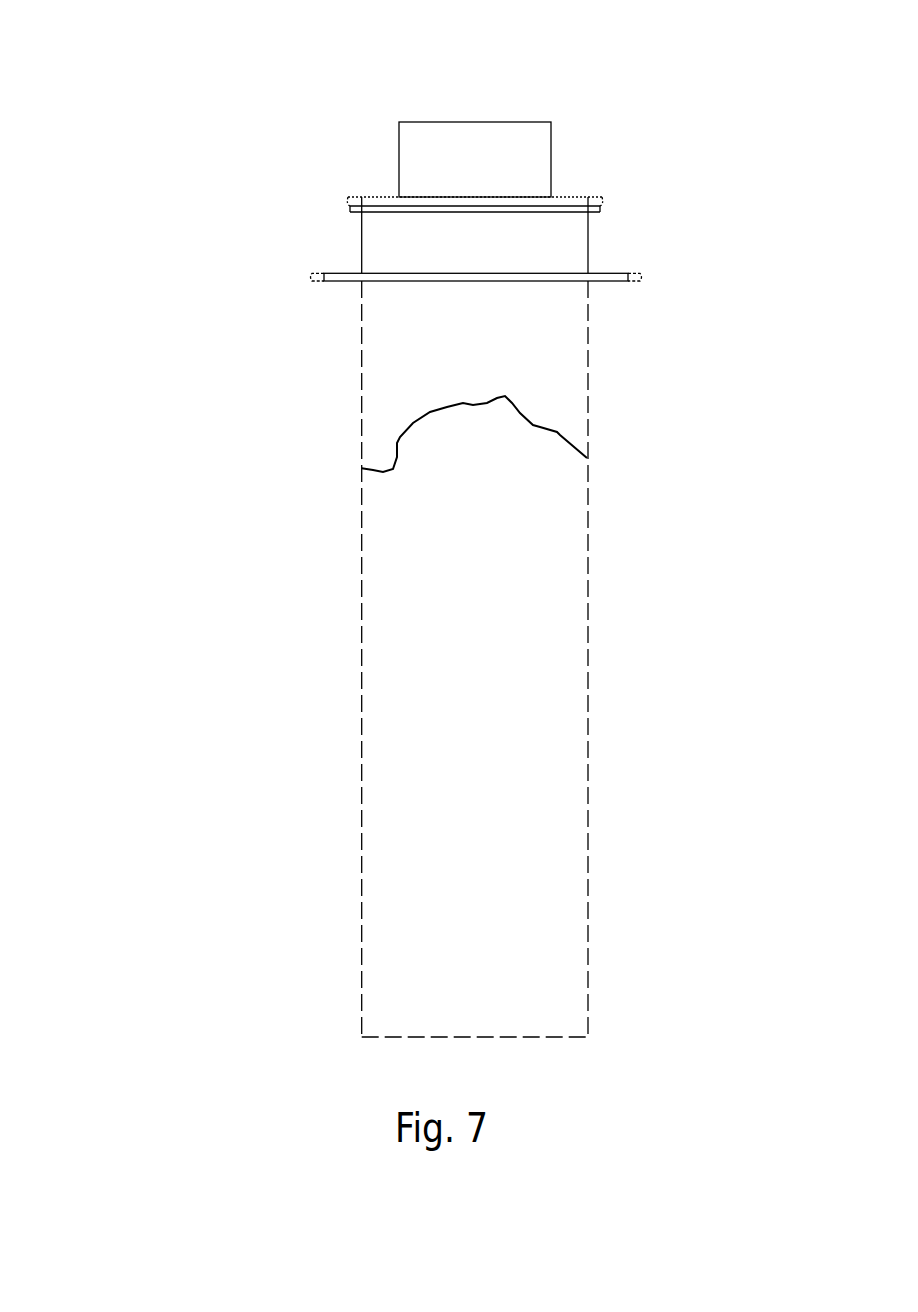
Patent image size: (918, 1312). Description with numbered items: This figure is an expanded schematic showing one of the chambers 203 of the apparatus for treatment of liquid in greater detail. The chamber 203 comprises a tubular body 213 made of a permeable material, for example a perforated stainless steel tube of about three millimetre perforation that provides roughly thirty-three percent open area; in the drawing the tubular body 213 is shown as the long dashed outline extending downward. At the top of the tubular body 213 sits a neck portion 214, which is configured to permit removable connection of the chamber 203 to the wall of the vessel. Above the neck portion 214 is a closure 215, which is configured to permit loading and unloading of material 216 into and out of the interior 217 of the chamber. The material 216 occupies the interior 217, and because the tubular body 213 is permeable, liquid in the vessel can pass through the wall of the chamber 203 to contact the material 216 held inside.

The chamber 203 is at (246, 92).
The tubular body 213 is at (360, 477).
The neck portion 214 is at (360, 273).
The closure 215 is at (555, 152).
The material 216 is at (475, 659).
The interior of the chamber 217 is at (474, 260).